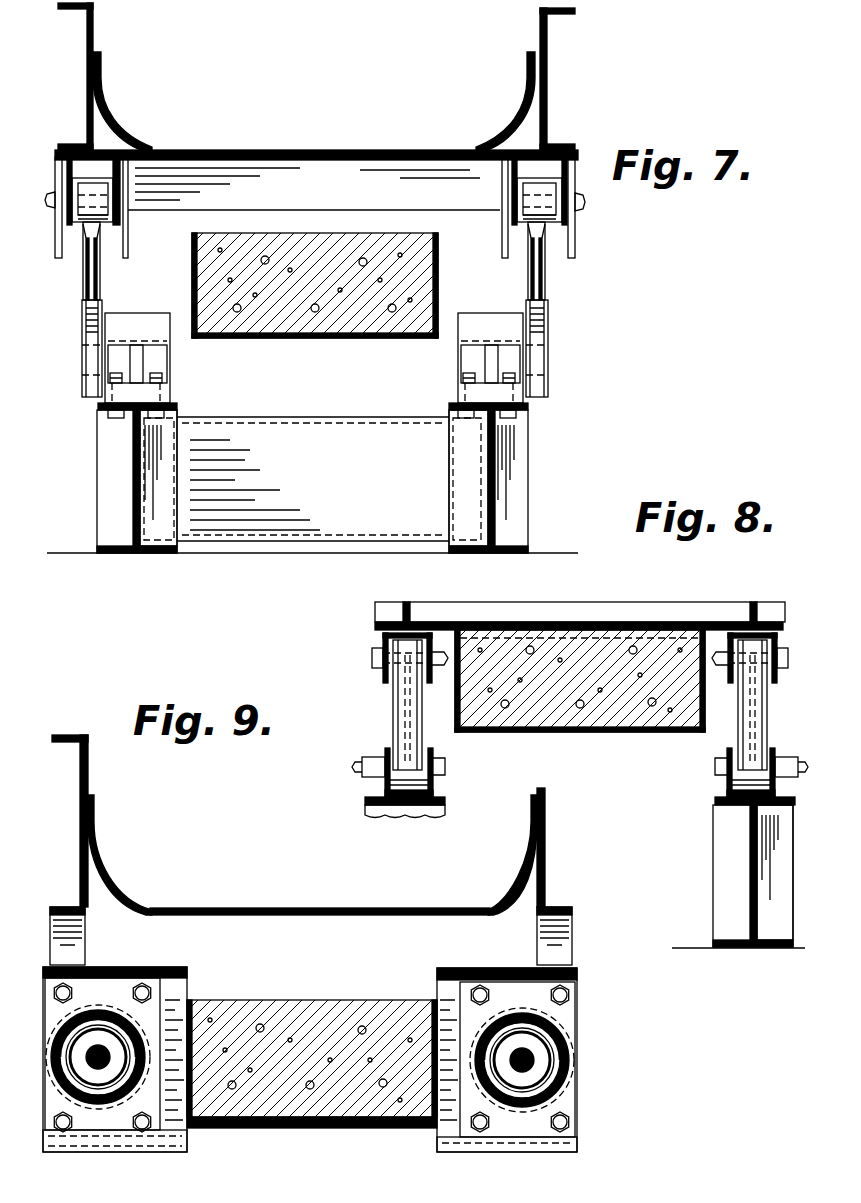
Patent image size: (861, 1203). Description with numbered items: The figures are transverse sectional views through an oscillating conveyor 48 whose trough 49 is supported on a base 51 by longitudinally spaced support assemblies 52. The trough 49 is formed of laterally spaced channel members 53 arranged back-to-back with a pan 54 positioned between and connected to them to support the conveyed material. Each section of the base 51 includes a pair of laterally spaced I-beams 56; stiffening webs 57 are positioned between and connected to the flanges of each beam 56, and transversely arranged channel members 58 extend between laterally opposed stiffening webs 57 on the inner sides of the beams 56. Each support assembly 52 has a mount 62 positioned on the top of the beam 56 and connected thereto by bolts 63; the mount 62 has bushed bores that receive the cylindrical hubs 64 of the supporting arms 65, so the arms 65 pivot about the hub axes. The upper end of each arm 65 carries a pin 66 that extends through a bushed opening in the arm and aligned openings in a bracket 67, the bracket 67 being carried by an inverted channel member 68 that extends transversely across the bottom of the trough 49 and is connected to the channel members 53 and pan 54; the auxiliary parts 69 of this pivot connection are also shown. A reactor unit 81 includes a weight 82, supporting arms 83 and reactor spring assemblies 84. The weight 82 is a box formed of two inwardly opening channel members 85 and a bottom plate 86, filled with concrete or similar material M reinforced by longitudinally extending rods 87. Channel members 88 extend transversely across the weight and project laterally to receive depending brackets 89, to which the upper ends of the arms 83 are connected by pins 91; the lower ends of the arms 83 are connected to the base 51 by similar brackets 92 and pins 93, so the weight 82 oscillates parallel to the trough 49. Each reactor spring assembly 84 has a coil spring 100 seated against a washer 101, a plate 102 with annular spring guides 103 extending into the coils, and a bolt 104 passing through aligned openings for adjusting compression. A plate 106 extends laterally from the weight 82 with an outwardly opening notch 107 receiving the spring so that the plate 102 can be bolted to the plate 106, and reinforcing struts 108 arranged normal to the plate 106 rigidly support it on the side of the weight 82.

In FIG. 7, the oscillating conveyor 48 is at (583, 248).
In FIG. 7, the trough 49 is at (556, 69).
In FIG. 9, the trough 49 is at (555, 851).
In FIG. 7, the base 51 is at (313, 481).
In FIG. 8, the base 51 is at (738, 888).
In FIG. 7, the support assembly 52 is at (76, 292).
In FIG. 7, the channel member 53 is at (93, 40).
In FIG. 9, the channel member 53 is at (546, 890).
In FIG. 7, the pan 54 is at (120, 122).
In FIG. 9, the pan 54 is at (224, 908).
In FIG. 7, the I-beam 56 is at (133, 465).
In FIG. 8, the I-beam 56 is at (750, 823).
In FIG. 7, the stiffening web 57 is at (521, 445).
In FIG. 8, the stiffening web 57 is at (762, 930).
In FIG. 7, the channel member 58 is at (337, 417).
In FIG. 7, the mount 62 is at (145, 315).
In FIG. 7, the bolt 63 is at (158, 376).
In FIG. 7, the cylindrical hub 64 is at (106, 362).
In FIG. 7, the supporting arm 65 is at (83, 325).
In FIG. 7, the pin 66 is at (53, 193).
In FIG. 7, the bracket 67 is at (130, 170).
In FIG. 7, the inverted channel member 68 is at (398, 162).
In FIG. 7, the side bars 69 is at (58, 232).
In FIG. 7, the reactor unit 81 is at (318, 290).
In FIG. 8, the reactor unit 81 is at (583, 670).
In FIG. 9, the reactor unit 81 is at (312, 1063).
In FIG. 7, the weight 82 is at (439, 280).
In FIG. 8, the weight 82 is at (618, 727).
In FIG. 9, the weight 82 is at (350, 1002).
In FIG. 8, the supporting arm 83 is at (387, 710).
In FIG. 9, the reactor spring assembly 84 is at (332, 1044).
In FIG. 7, the channel member 85 is at (193, 264).
In FIG. 8, the channel member 85 is at (456, 700).
In FIG. 9, the channel member 85 is at (205, 1012).
In FIG. 7, the bottom plate 86 is at (348, 340).
In FIG. 8, the bottom plate 86 is at (562, 733).
In FIG. 9, the bottom plate 86 is at (338, 1130).
In FIG. 7, the rod 87 is at (315, 305).
In FIG. 8, the rod 87 is at (506, 700).
In FIG. 9, the rod 87 is at (330, 1098).
In FIG. 8, the channel member 88 is at (493, 612).
In FIG. 8, the depending bracket 89 is at (383, 637).
In FIG. 8, the pin 91 is at (372, 660).
In FIG. 8, the bracket 92 is at (434, 786).
In FIG. 8, the pin 93 is at (445, 764).
In FIG. 9, the coil spring 100 is at (128, 1040).
In FIG. 9, the washer 101 is at (122, 1052).
In FIG. 9, the plate 102 is at (98, 990).
In FIG. 9, the annular spring guide 103 is at (128, 1000).
In FIG. 9, the bolt 104 is at (106, 1068).
In FIG. 9, the plate 106 is at (175, 1133).
In FIG. 9, the notch 107 is at (80, 990).
In FIG. 9, the reinforcing strut 108 is at (160, 978).
In FIG. 7, the material M is at (338, 262).
In FIG. 8, the material M is at (527, 715).
In FIG. 9, the material M is at (310, 1020).